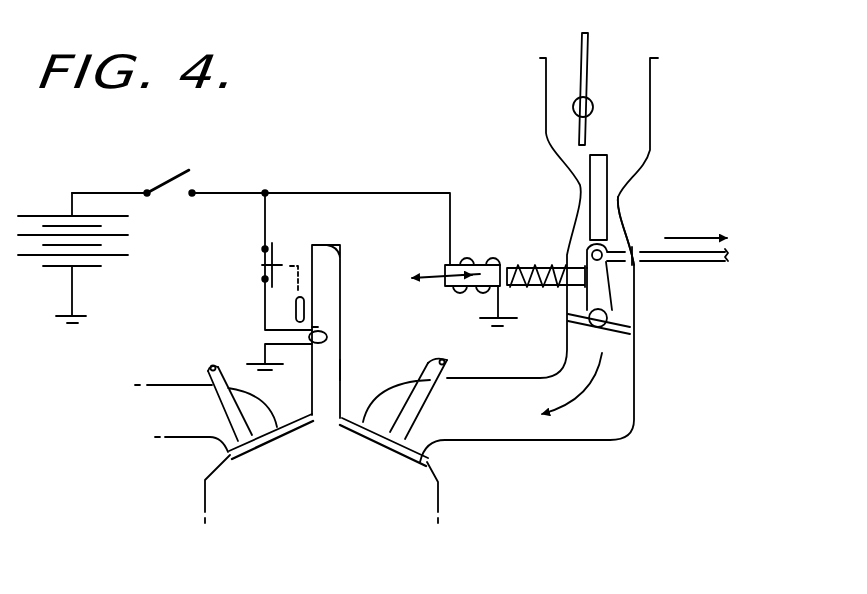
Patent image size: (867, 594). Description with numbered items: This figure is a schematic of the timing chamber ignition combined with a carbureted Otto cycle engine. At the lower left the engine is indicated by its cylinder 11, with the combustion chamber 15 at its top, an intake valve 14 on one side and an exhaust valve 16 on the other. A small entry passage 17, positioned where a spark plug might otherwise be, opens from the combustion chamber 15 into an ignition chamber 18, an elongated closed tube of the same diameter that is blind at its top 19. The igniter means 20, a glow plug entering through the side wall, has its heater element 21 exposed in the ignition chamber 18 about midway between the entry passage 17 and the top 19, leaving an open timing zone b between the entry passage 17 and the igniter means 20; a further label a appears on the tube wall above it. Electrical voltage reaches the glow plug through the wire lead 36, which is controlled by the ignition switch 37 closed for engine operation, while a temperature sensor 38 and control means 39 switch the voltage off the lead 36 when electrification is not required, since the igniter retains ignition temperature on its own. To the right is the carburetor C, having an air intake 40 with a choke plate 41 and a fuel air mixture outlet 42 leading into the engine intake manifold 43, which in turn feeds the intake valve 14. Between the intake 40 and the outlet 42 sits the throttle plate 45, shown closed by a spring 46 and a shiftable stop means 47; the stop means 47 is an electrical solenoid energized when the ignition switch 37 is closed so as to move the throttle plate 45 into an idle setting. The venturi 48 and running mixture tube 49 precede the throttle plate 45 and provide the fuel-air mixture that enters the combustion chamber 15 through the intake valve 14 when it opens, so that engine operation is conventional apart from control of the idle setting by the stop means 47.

The cylinder 11 is at (437, 480).
The intake valve 14 is at (433, 465).
The combustion chamber 15 is at (343, 494).
The exhaust valve 16 is at (226, 458).
The entry passage 17 is at (326, 420).
The ignition chamber 18 is at (325, 363).
The top 19 is at (343, 258).
The igniter means 20 is at (348, 338).
The heater element 21 is at (325, 327).
The wire lead 36 is at (357, 192).
The ignition switch 37 is at (161, 182).
The temperature sensor 38 is at (296, 307).
The control means 39 is at (262, 251).
The air intake 40 is at (618, 68).
The choke plate 41 is at (577, 78).
The fuel air mixture outlet 42 is at (623, 338).
The intake manifold 43 is at (547, 430).
The throttle plate 45 is at (612, 315).
The spring 46 is at (537, 262).
The stop means 47 is at (583, 283).
The venturi 48 is at (612, 198).
The running mixture tube 49 is at (608, 162).
The point a is at (328, 282).
The timing zone b is at (310, 390).
The carburetor C is at (537, 126).